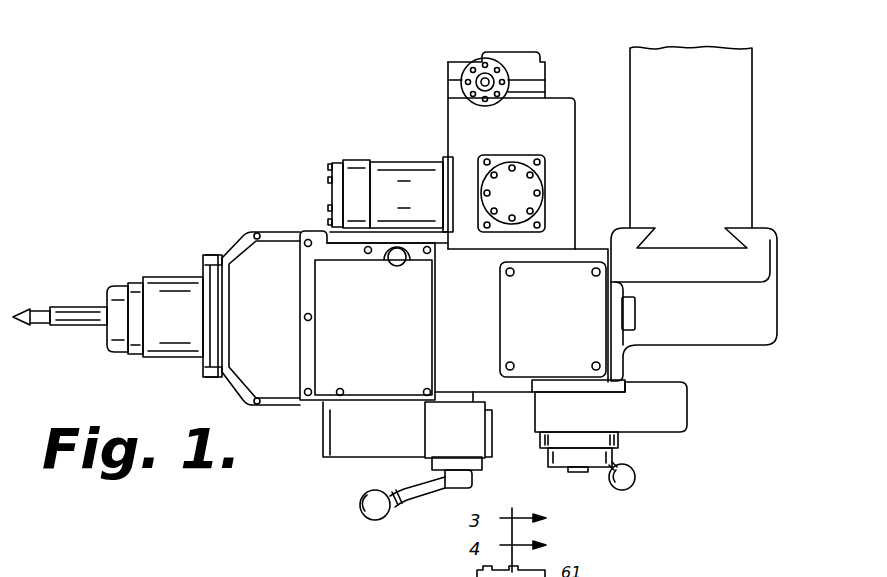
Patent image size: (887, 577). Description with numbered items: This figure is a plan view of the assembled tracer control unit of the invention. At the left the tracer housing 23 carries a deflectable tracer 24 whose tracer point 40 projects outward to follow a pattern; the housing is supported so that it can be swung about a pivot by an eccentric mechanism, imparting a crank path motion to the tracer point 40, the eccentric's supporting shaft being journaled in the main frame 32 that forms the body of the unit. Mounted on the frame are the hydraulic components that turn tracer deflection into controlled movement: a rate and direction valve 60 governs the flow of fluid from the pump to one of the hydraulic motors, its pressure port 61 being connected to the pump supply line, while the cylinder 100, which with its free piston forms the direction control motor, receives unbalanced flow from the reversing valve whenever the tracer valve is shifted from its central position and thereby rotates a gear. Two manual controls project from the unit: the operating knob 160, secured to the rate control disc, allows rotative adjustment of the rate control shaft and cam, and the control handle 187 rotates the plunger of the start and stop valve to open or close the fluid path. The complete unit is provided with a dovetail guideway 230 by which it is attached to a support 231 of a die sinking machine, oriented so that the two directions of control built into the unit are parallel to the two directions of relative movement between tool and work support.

The tracer housing 23 is at (136, 353).
The deflectable tracer 24 is at (71, 327).
The main frame 32 is at (248, 395).
The tracer point 40 is at (13, 315).
The rate and direction valve 60 is at (386, 165).
The pressure port 61 is at (546, 190).
The cylinder 100 is at (476, 58).
The operating knob 160 is at (618, 491).
The control handle 187 is at (407, 503).
The dovetail guideway 230 is at (697, 252).
The support 231 is at (745, 146).